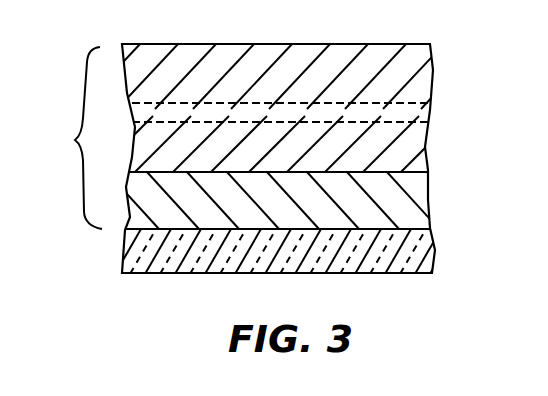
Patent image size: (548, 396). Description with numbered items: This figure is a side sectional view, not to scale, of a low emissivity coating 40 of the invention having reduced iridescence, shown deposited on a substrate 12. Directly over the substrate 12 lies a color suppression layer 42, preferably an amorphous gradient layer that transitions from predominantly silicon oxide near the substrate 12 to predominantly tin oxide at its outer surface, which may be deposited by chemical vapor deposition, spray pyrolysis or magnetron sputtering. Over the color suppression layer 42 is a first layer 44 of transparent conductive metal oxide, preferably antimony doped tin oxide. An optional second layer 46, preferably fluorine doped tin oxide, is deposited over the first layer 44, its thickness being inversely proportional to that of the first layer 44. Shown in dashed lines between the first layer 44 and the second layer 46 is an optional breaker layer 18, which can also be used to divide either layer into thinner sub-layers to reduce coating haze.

The low emissivity coating 40 is at (240, 158).
The second layer 46 is at (434, 76).
The breaker layer 18 is at (436, 113).
The first layer 44 is at (426, 149).
The color suppression layer 42 is at (429, 198).
The substrate 12 is at (433, 248).